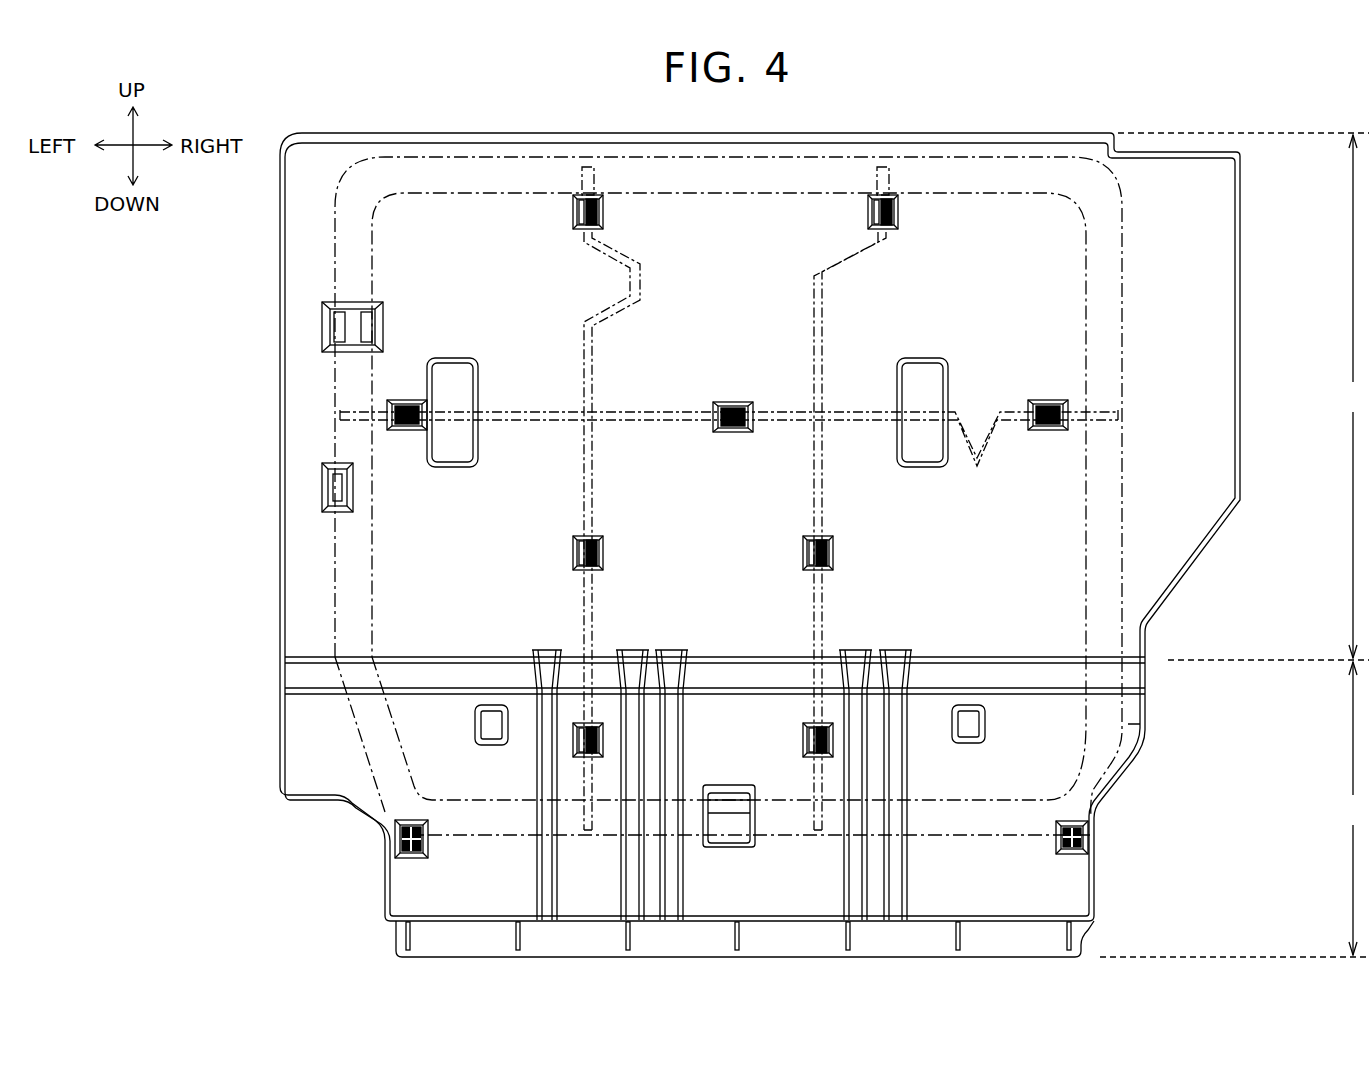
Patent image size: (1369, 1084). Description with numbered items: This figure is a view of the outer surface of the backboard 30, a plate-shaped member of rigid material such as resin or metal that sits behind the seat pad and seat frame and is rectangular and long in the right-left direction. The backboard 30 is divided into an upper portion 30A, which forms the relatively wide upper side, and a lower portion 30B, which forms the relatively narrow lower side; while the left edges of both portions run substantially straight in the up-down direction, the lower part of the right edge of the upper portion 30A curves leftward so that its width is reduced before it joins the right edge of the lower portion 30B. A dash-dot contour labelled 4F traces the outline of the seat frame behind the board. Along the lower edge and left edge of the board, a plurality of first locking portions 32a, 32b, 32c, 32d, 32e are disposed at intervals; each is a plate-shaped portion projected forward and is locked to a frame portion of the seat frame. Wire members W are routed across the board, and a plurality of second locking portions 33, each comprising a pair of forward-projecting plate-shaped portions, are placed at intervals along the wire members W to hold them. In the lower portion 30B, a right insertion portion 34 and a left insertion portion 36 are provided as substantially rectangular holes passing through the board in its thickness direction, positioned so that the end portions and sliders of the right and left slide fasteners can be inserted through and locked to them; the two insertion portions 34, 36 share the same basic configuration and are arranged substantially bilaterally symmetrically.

The backboard 30 is at (978, 126).
The upper portion 30A is at (1243, 396).
The lower portion 30B is at (1234, 809).
The rear surface region outline 4F is at (460, 160).
The wire member W is at (597, 342).
The second locking portion 33 is at (900, 212).
The first locking portion 32a is at (1075, 856).
The first locking portion 32b is at (728, 845).
The first locking portion 32c is at (402, 857).
The first locking portion 32d is at (322, 480).
The first locking portion 32e is at (322, 323).
The right insertion portion 34 is at (962, 722).
The left insertion portion 36 is at (487, 722).